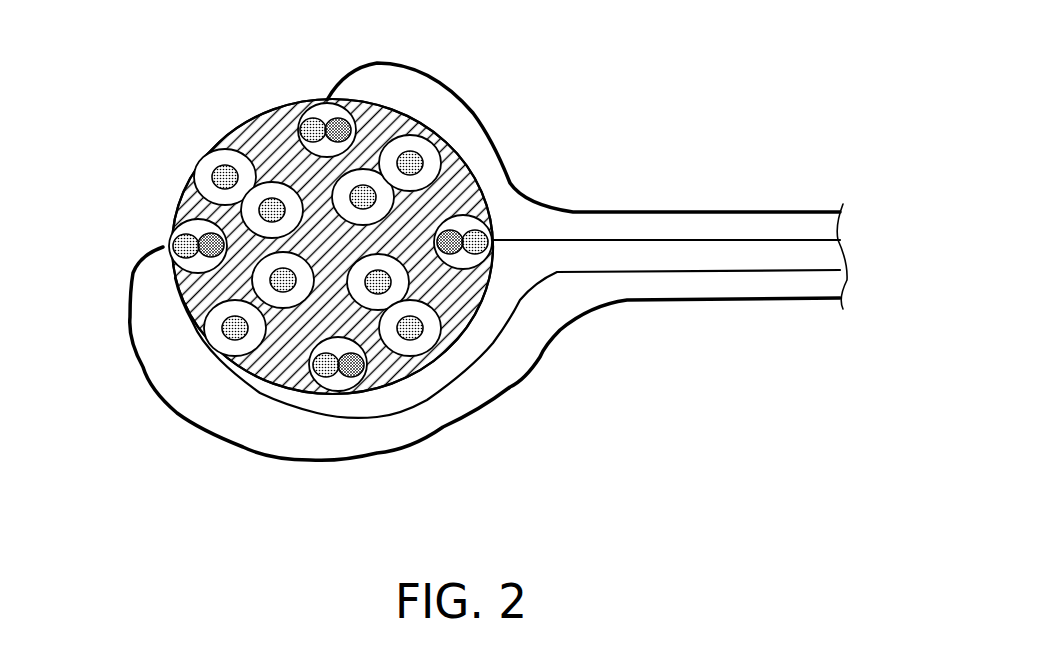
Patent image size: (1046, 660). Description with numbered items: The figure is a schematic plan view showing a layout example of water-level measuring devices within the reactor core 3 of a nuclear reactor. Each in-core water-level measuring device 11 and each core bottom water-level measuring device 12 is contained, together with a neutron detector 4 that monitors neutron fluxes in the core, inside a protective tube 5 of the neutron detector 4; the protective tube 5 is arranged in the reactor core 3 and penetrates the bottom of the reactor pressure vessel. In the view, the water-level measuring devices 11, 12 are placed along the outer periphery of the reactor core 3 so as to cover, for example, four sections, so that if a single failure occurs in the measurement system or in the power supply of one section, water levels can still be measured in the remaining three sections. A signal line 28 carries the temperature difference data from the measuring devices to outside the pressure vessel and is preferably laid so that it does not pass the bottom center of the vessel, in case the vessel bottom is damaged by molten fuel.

The reactor core 3 is at (213, 150).
The neutron detector 4 is at (314, 118).
The protective tube 5 is at (233, 127).
The in-core water-level measuring device 11 is at (350, 271).
The core bottom water-level measuring device 12 is at (340, 118).
The signal line 28 is at (715, 300).